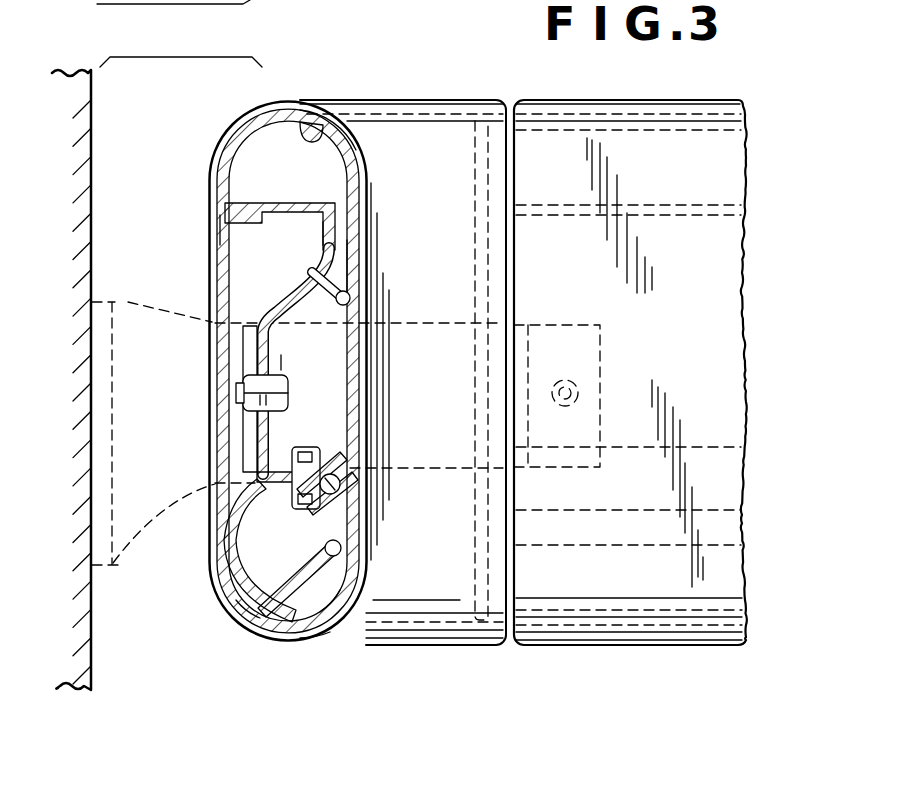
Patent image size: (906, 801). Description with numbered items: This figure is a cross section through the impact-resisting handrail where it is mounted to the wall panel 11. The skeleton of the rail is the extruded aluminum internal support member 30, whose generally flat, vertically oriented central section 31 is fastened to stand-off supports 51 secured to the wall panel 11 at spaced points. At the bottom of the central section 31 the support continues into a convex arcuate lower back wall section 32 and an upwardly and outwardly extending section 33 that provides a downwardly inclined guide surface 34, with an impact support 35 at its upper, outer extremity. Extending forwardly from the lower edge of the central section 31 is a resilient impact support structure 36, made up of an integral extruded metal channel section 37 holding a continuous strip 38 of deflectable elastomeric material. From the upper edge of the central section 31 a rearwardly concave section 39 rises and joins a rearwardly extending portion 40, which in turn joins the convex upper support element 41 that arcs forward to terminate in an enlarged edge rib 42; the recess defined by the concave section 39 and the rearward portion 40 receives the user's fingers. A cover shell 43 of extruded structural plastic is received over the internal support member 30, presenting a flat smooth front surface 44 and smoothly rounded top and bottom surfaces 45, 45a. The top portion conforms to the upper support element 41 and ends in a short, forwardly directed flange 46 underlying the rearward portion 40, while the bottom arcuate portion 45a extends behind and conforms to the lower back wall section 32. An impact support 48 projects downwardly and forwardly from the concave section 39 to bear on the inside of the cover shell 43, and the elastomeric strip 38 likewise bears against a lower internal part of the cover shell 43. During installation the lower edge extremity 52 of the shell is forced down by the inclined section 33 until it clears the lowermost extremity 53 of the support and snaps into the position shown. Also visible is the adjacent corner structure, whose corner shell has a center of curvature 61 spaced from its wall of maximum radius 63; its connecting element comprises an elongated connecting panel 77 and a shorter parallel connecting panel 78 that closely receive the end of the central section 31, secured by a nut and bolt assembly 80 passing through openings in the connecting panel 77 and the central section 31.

The wall panel 11 is at (90, 253).
The internal support member 30 is at (294, 0).
The central section 31 is at (275, 440).
The lower back wall section 32 is at (253, 565).
The upwardly and outwardly extending section 33 is at (350, 598).
The guide surface 34 is at (297, 628).
The impact support 35 is at (345, 550).
The resilient impact support structure 36 is at (345, 467).
The channel section 37 is at (333, 447).
The elastomeric strip 38 is at (362, 512).
The rearwardly concave section 39 is at (337, 237).
The rearwardly extending portion 40 is at (260, 203).
The upper support element 41 is at (257, 123).
The edge rib 42 is at (338, 123).
The cover shell 43 is at (367, 180).
The front surface 44 is at (355, 265).
The top surface 45 is at (290, 115).
The bottom surface 45a is at (318, 645).
The flange 46 is at (210, 240).
The impact support 48 is at (352, 300).
The stand-off support 51 is at (123, 322).
The lower edge extremity 52 is at (213, 520).
The lowermost extremity 53 is at (240, 617).
The center of curvature 61 is at (370, 360).
The wall of maximum radius 63 is at (212, 383).
The connecting panel 77 is at (603, 348).
The connecting panel 78 is at (242, 435).
The nut and bolt assembly 80 is at (288, 396).